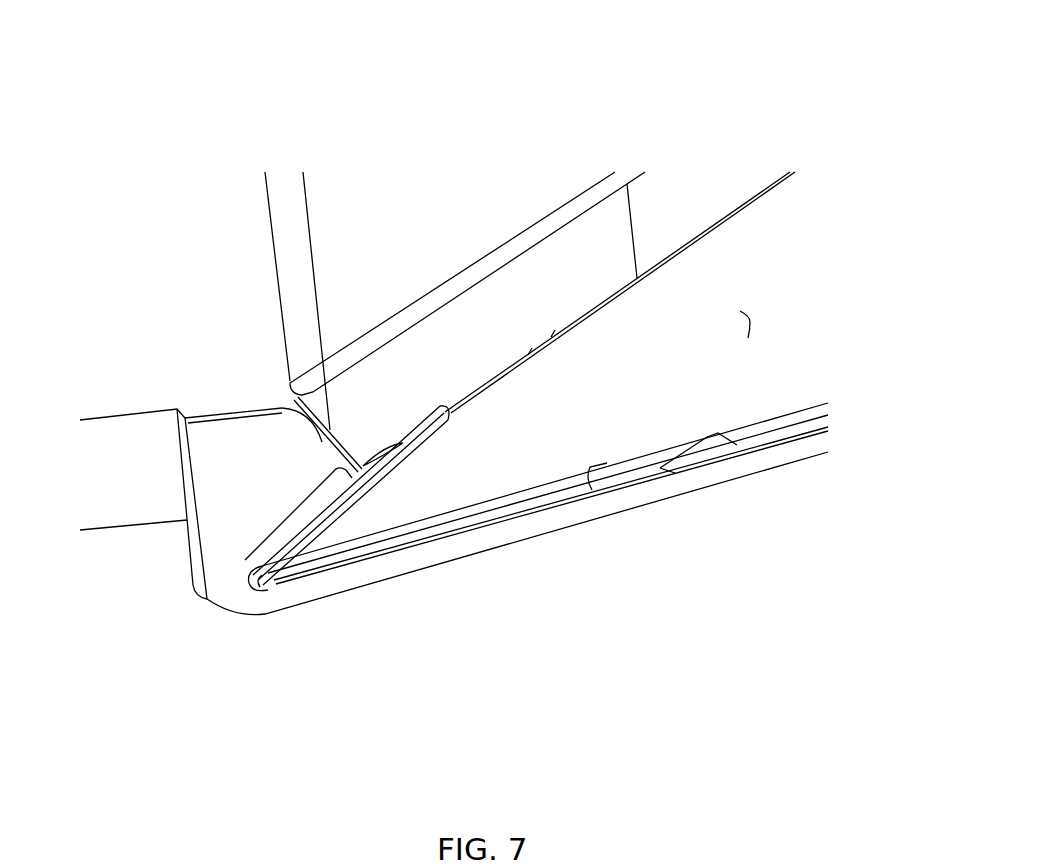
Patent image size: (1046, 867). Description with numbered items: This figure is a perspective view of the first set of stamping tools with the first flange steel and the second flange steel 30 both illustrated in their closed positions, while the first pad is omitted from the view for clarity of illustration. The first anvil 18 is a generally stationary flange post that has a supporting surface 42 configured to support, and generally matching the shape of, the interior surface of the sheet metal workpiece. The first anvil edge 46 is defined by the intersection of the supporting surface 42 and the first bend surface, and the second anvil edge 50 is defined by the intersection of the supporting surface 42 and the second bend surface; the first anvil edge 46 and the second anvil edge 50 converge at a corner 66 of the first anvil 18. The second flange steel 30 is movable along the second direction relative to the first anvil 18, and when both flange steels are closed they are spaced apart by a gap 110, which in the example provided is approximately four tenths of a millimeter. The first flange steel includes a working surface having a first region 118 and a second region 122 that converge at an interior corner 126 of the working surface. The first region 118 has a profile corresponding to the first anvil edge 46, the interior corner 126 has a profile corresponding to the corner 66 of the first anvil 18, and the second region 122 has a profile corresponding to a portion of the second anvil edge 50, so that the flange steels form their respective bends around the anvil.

The first anvil 18 is at (772, 233).
The second flange steel 30 is at (375, 227).
The supporting surface 42 is at (750, 322).
The first anvil edge 46 is at (662, 470).
The second anvil edge 50 is at (575, 322).
The corner 66 is at (245, 585).
The gap 110 is at (322, 442).
The first region 118 is at (525, 527).
The second region 122 is at (286, 530).
The interior corner 126 is at (245, 580).